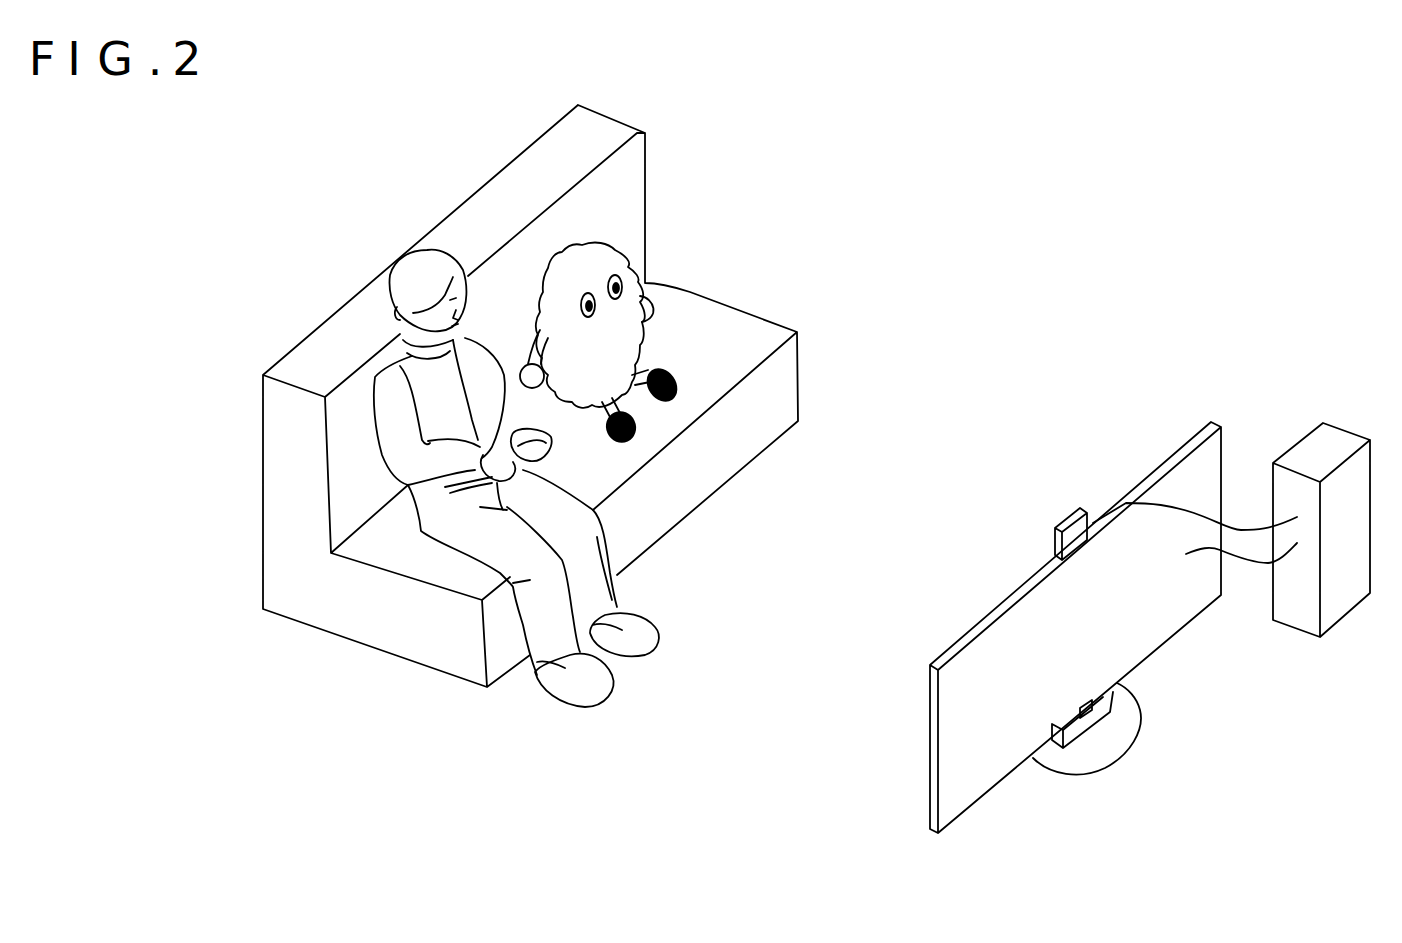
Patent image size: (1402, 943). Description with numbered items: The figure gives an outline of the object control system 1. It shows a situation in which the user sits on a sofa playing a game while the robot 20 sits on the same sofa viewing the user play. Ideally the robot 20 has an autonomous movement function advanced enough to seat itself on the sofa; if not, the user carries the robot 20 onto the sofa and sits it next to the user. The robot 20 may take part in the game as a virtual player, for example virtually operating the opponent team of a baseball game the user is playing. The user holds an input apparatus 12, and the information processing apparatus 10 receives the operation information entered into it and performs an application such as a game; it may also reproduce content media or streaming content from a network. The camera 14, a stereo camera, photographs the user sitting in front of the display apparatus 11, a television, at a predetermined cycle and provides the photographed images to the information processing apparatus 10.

The object control system 1 is at (822, 903).
The information processing apparatus 10 is at (1318, 443).
The display apparatus 11 is at (987, 668).
The input apparatus 12 is at (540, 464).
The camera 14 is at (1070, 519).
The robot 20 is at (675, 384).